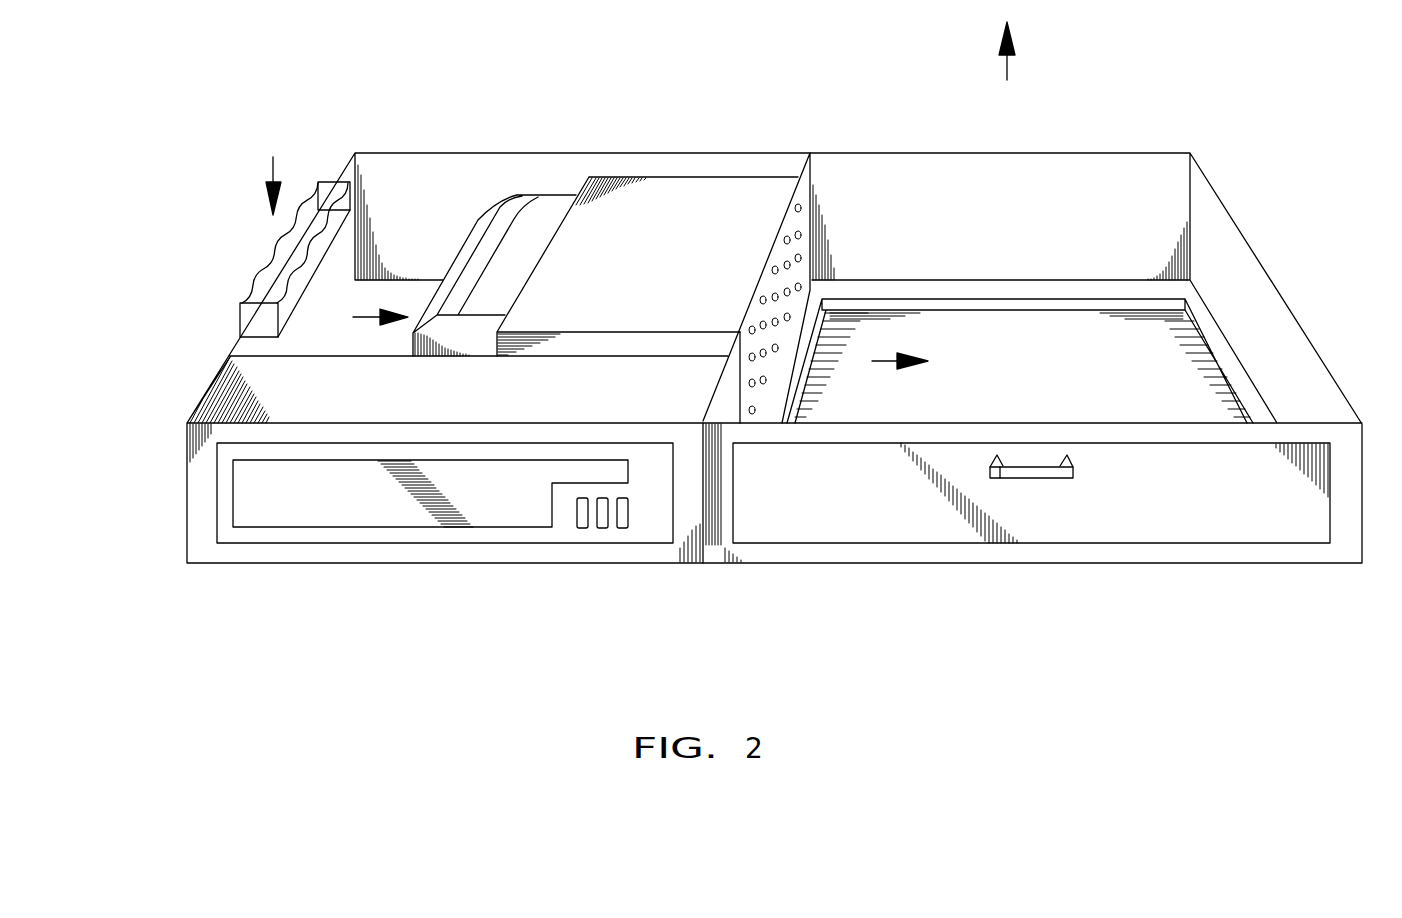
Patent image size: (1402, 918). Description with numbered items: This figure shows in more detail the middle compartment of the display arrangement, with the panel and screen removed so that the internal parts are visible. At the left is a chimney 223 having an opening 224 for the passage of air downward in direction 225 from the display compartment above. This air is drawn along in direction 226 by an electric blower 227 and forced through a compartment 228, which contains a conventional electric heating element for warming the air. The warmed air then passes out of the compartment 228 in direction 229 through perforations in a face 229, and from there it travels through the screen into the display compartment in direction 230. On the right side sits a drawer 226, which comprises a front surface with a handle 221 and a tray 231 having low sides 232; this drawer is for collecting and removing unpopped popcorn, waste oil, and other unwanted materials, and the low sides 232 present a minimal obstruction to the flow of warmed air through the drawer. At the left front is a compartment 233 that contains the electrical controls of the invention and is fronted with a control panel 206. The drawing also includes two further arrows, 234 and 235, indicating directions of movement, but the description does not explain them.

The control panel 206 is at (303, 533).
The handle 221 is at (1023, 480).
The chimney 223 is at (242, 297).
The opening 224 is at (310, 238).
The direction 225 is at (273, 160).
The drawer 226 is at (778, 533).
The electric blower 227 is at (528, 212).
The compartment 228 is at (668, 212).
The face 229 is at (805, 245).
The direction 230 is at (1007, 72).
The tray 231 is at (1137, 378).
The low sides 232 is at (1203, 340).
The compartment 233 is at (235, 398).
The feed direction arrow 234 is at (365, 320).
The transport direction arrow 235 is at (883, 360).